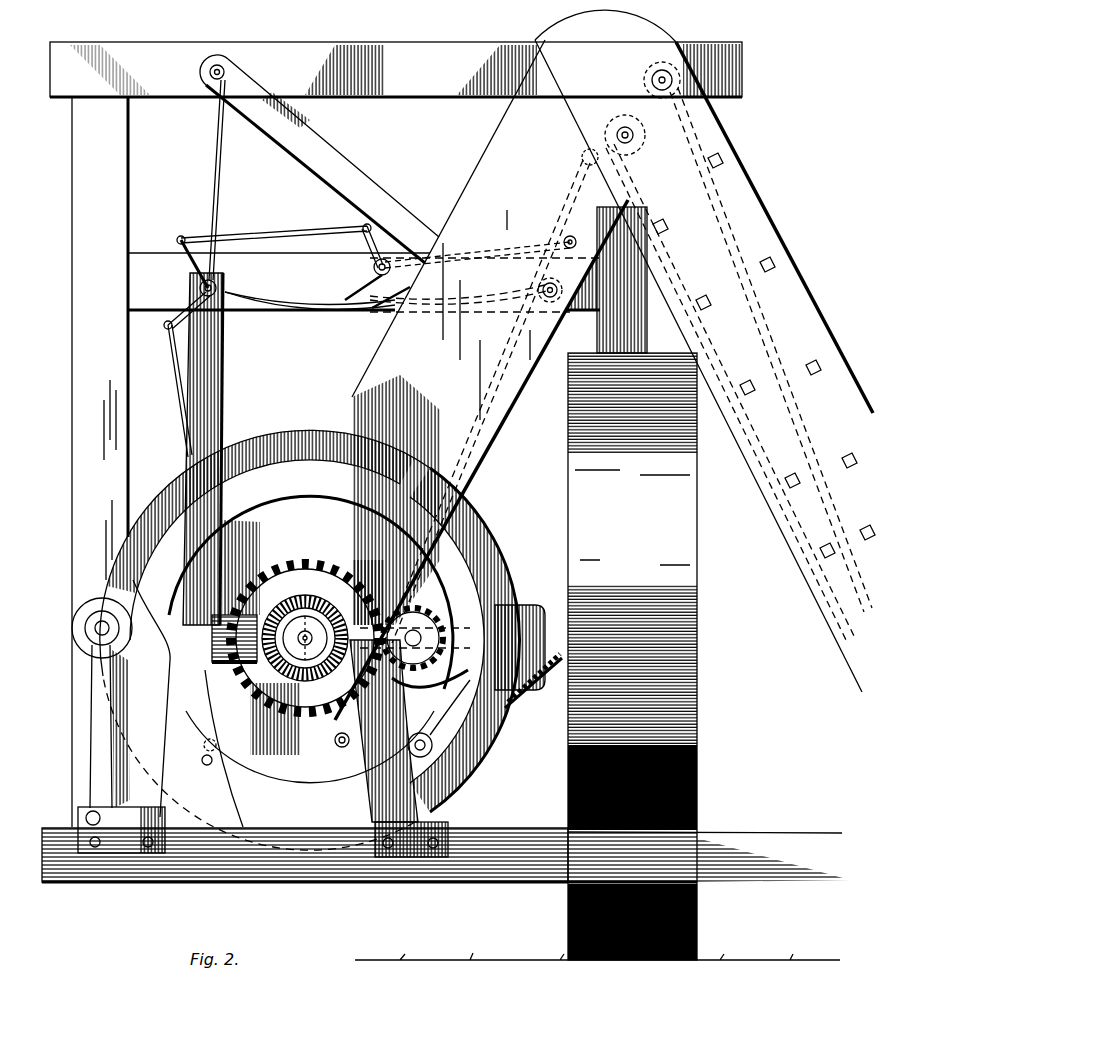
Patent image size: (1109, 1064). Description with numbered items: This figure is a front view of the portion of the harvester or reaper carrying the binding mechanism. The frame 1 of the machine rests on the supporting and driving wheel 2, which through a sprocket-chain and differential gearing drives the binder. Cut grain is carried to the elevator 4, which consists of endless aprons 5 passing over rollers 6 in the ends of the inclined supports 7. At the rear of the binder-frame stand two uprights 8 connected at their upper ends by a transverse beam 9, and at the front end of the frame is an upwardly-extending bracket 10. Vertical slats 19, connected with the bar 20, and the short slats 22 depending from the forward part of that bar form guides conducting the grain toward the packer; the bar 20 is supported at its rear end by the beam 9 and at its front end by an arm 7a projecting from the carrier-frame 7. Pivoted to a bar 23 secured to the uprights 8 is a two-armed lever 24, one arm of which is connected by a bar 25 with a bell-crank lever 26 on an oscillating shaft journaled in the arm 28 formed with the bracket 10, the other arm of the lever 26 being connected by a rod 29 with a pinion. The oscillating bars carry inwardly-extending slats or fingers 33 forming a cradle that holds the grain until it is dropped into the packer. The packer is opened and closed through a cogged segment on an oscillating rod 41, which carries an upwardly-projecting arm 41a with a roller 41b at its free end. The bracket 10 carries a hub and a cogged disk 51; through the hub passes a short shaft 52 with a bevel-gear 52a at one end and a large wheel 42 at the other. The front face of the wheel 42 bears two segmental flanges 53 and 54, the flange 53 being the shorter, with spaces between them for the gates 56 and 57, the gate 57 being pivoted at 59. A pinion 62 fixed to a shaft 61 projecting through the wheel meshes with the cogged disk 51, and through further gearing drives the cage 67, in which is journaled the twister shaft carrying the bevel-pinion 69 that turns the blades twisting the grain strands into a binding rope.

The frame 1 is at (505, 862).
The supporting and driving wheel 2 is at (632, 656).
The elevator 4 is at (704, 366).
The endless aprons 5 is at (740, 364).
The rollers 6 is at (655, 70).
The inclined supports 7 is at (505, 365).
The arm 7a is at (319, 159).
The uprights 8 is at (127, 320).
The transverse beam 9 is at (396, 69).
The bracket 10 is at (398, 715).
The vertical slats 19 is at (224, 190).
The bar 20 is at (209, 72).
The short slats 22 is at (300, 729).
The bar 23 is at (295, 274).
The two-armed lever 24 is at (393, 255).
The bar 25 is at (280, 236).
The bell-crank lever 26 is at (189, 284).
The arm 28 is at (218, 449).
The rod 29 is at (180, 374).
The slats or fingers 33 is at (310, 313).
The oscillating rod 41 is at (263, 832).
The arm 41a is at (92, 718).
The roller 41b is at (102, 620).
The large wheel 42 is at (310, 608).
The cogged disk 51 is at (310, 558).
The short shaft 52 is at (305, 661).
The bevel-gear 52a is at (305, 624).
The segmental flange 53 is at (311, 651).
The segmental flange 54 is at (313, 621).
The gate 56 is at (217, 763).
The gate 57 is at (431, 702).
The pivot 59 is at (426, 742).
The shaft 61 is at (414, 647).
The pinion 62 is at (415, 625).
The cage 67 is at (520, 635).
The bevel-pinion 69 is at (533, 691).